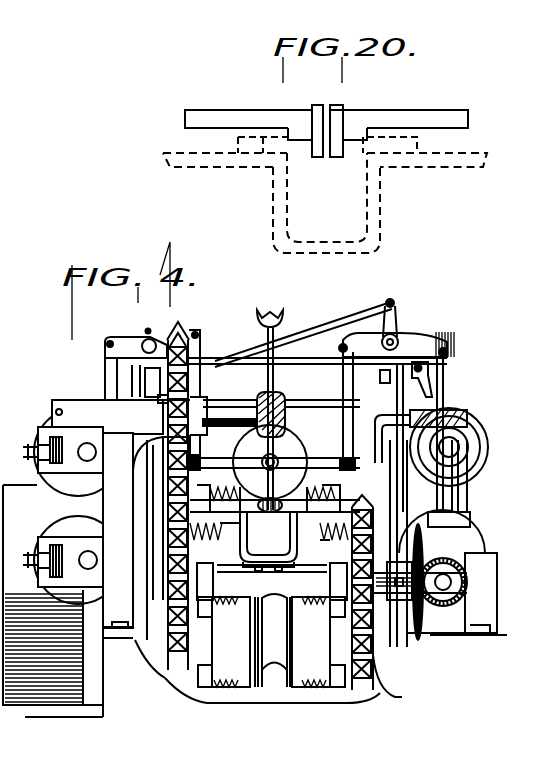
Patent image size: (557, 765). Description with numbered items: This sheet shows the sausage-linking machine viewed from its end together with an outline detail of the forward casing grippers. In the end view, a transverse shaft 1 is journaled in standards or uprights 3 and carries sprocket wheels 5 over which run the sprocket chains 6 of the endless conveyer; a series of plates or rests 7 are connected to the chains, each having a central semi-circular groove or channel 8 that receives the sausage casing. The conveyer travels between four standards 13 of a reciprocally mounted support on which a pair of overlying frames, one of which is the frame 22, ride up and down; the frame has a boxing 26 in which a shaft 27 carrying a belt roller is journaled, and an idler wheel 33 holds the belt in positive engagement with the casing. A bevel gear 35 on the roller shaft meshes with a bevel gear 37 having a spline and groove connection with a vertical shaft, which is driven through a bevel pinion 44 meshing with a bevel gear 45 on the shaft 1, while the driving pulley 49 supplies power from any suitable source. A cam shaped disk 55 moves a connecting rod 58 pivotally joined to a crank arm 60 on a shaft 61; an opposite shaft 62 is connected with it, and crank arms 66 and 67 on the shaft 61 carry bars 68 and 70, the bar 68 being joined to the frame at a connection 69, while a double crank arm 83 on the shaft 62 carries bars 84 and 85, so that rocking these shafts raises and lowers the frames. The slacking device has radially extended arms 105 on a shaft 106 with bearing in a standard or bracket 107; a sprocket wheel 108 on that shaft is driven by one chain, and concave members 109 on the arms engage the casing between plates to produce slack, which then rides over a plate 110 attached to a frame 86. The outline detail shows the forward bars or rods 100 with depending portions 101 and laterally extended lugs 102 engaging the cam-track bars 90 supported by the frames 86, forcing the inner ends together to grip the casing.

In FIG. 20, the bars or rods 100 is at (218, 97).
In FIG. 20, the depending portions 101 is at (315, 120).
In FIG. 20, the laterally extended lugs 102 is at (307, 143).
In FIG. 20, the bars 90 is at (242, 143).
In FIG. 20, the frames 86 is at (325, 203).
In FIG. 4, the transverse shaft 1 is at (224, 642).
In FIG. 4, the standards or uprights 3 is at (308, 594).
In FIG. 4, the sprocket wheels 5 is at (160, 673).
In FIG. 4, the sprocket chains 6 is at (372, 690).
In FIG. 4, the plates or rests 7 is at (318, 642).
In FIG. 4, the grooves or channels 8 is at (272, 640).
In FIG. 4, the standards 13 is at (140, 483).
In FIG. 4, the frame 22 is at (322, 463).
In FIG. 4, the boxing 26 is at (32, 500).
In FIG. 4, the shaft 27 is at (63, 442).
In FIG. 4, the idler wheel 33 is at (283, 447).
In FIG. 4, the bevel gear 35 is at (443, 450).
In FIG. 4, the bevel gear 37 is at (467, 433).
In FIG. 4, the bevel pinion 44 is at (463, 556).
In FIG. 4, the bevel gear 45 is at (410, 637).
In FIG. 4, the driving pulley 49 is at (62, 705).
In FIG. 4, the cam shaped disk 55 is at (468, 547).
In FIG. 4, the connecting rod 58 is at (445, 452).
In FIG. 4, the crank arm 60 is at (420, 345).
In FIG. 4, the shaft 61 is at (400, 330).
In FIG. 4, the shaft 62 is at (150, 345).
In FIG. 4, the crank arm 66 is at (353, 342).
In FIG. 4, the crank arm 67 is at (413, 372).
In FIG. 4, the bar 68 is at (348, 380).
In FIG. 4, the connection 69 is at (365, 580).
In FIG. 4, the bar 70 is at (467, 490).
In FIG. 4, the double crank arm 83 is at (157, 340).
In FIG. 4, the bar 84 is at (200, 373).
In FIG. 4, the bar 85 is at (113, 373).
In FIG. 4, the radially extended arms 105 is at (263, 337).
In FIG. 4, the shaft 106 is at (53, 412).
In FIG. 4, the standard or bracket 107 is at (100, 428).
In FIG. 4, the sprocket wheel 108 is at (180, 400).
In FIG. 4, the members 109 is at (287, 302).
In FIG. 4, the plate 110 is at (268, 541).